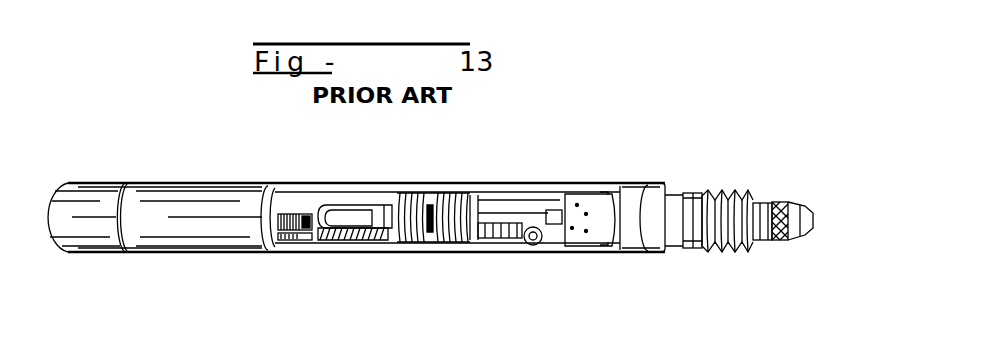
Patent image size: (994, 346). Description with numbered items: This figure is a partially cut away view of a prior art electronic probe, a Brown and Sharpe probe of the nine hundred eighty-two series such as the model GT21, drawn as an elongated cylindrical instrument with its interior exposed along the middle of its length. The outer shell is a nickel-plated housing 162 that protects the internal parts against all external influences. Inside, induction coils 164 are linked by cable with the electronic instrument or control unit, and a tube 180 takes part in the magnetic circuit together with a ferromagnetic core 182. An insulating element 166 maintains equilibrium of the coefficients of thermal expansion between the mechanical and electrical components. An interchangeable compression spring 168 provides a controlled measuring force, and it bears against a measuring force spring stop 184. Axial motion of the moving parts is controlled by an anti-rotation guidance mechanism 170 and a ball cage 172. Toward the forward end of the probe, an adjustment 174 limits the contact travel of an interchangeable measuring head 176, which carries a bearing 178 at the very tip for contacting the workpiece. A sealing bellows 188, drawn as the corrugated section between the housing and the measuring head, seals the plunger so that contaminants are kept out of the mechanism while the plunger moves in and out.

The housing 162 is at (416, 190).
The induction coils 164 is at (367, 241).
The insulating element 166 is at (380, 213).
The compression spring 168 is at (490, 240).
The anti-rotation guidance mechanism 170 is at (532, 245).
The ball cage 172 is at (577, 224).
The adjustment 174 is at (630, 238).
The measuring head 176 is at (785, 242).
The bearing 178 is at (813, 212).
The tube 180 is at (293, 210).
The ferromagnetic core 182 is at (338, 200).
The measuring force spring stop 184 is at (429, 238).
The sealing bellows 188 is at (722, 247).